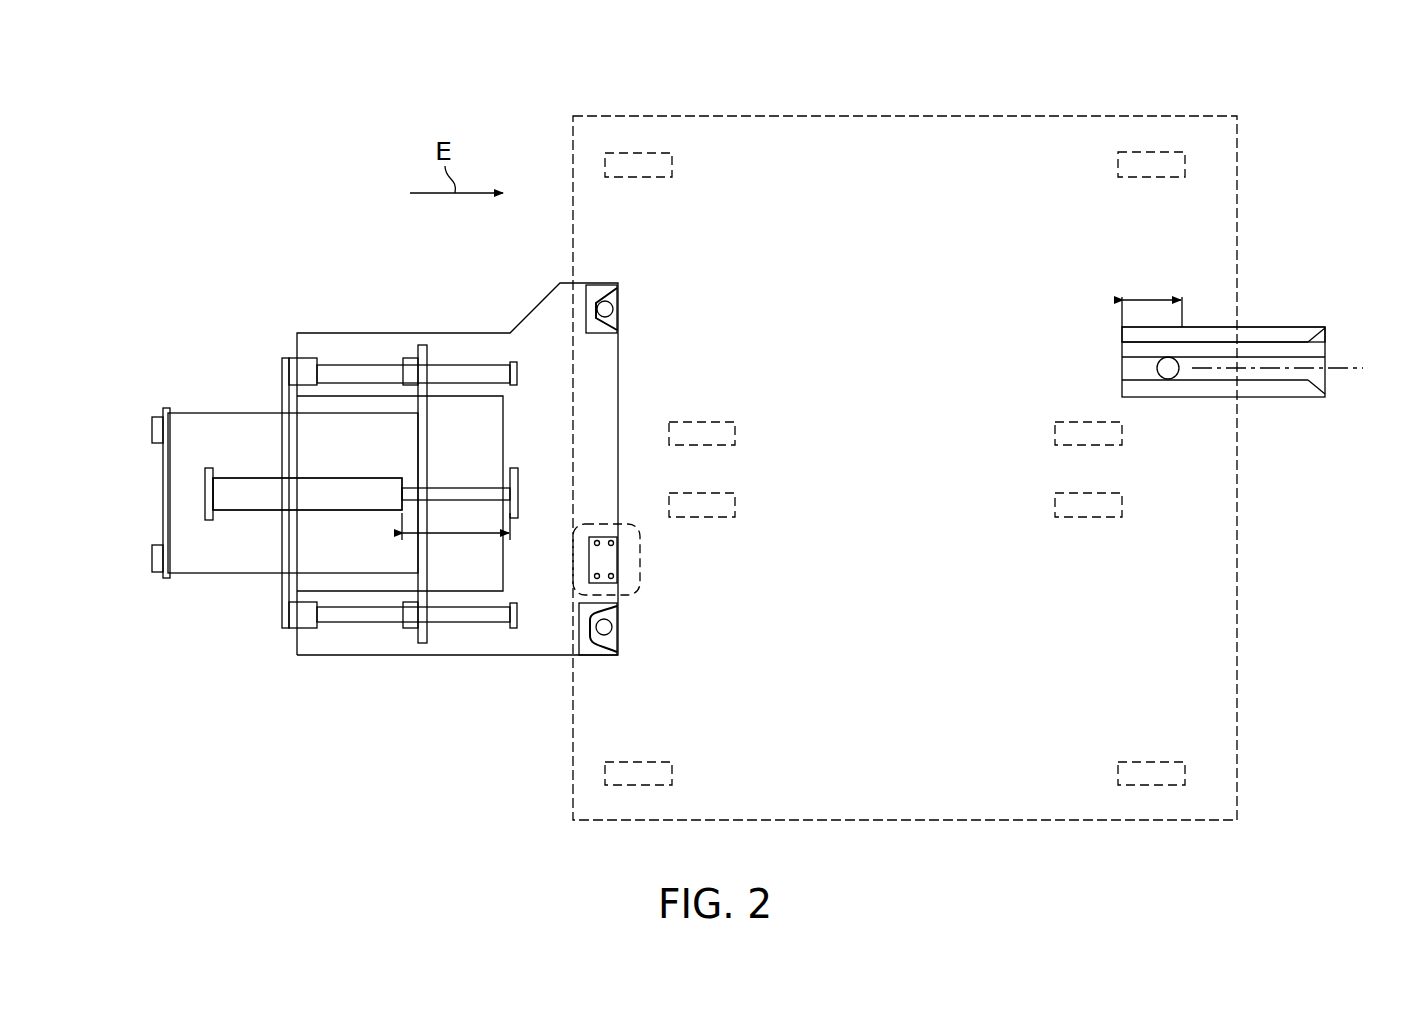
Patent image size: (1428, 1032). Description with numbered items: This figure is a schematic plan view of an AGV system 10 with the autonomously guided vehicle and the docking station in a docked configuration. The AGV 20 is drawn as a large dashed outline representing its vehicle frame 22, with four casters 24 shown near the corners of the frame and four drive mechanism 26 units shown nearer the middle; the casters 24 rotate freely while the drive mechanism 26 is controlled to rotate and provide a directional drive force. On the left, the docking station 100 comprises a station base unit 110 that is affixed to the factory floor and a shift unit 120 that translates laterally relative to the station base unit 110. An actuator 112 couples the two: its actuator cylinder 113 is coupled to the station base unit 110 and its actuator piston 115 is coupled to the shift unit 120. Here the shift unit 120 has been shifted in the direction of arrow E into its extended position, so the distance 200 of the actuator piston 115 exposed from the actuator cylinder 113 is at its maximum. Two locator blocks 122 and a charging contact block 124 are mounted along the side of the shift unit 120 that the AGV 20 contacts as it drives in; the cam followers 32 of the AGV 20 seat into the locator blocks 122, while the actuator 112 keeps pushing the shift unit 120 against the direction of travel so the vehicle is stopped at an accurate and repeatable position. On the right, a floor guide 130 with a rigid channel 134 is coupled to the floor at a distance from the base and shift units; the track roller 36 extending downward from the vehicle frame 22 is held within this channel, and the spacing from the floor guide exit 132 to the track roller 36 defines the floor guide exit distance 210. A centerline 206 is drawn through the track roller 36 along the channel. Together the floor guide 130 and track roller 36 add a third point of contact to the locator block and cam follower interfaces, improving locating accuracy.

The AGV system 10 is at (766, 417).
The AGV 20 is at (905, 417).
The vehicle frame 22 is at (743, 115).
The casters 24 is at (672, 160).
The drive mechanism 26 is at (735, 430).
The cam followers 32 is at (614, 309).
The track roller 36 is at (1157, 366).
The docking station 100 is at (401, 499).
The station base unit 110 is at (273, 438).
The actuator 112 is at (302, 544).
The actuator cylinder 113 is at (256, 476).
The actuator piston 115 is at (450, 486).
The shift unit 120 is at (478, 468).
The locator blocks 122 is at (593, 283).
The charging contact block 124 is at (589, 560).
The floor guide 130 is at (1226, 380).
The floor guide exit 132 is at (1122, 350).
The rigid channel 134 is at (1300, 343).
The distance 200 is at (458, 537).
The center axis 206 is at (1355, 368).
The floor guide exit distance 210 is at (1150, 297).